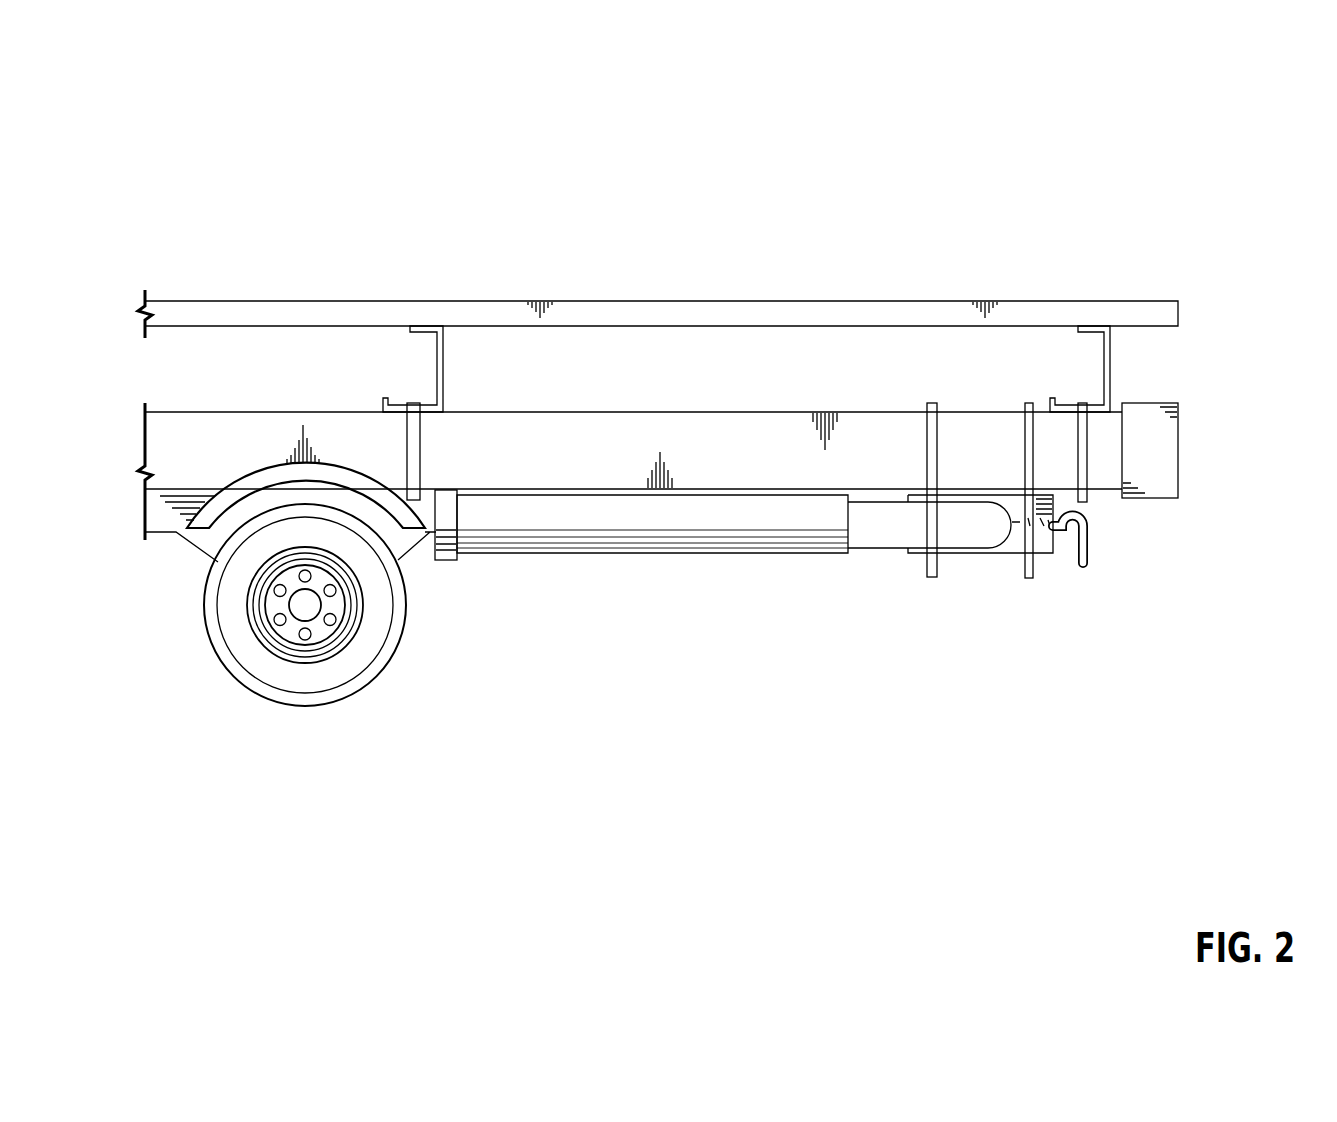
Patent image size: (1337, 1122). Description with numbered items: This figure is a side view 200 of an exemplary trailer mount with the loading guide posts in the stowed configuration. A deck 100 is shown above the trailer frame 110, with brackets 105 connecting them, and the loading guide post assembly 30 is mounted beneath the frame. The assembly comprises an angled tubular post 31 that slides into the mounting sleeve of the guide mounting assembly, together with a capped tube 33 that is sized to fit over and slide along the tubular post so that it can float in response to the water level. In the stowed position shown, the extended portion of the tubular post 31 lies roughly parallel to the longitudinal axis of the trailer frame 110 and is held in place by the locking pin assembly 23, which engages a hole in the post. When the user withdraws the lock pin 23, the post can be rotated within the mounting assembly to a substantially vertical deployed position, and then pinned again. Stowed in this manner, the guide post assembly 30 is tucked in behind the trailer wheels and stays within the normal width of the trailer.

The side view 200 is at (720, 373).
The deck 100 is at (1053, 301).
The bracket 105 is at (443, 380).
The trailer frame 110 is at (753, 412).
The loading guide post assembly 30 is at (744, 595).
The capped tube 33 is at (578, 553).
The tubular post 31 is at (893, 553).
The locking pin assembly 23 is at (1090, 547).